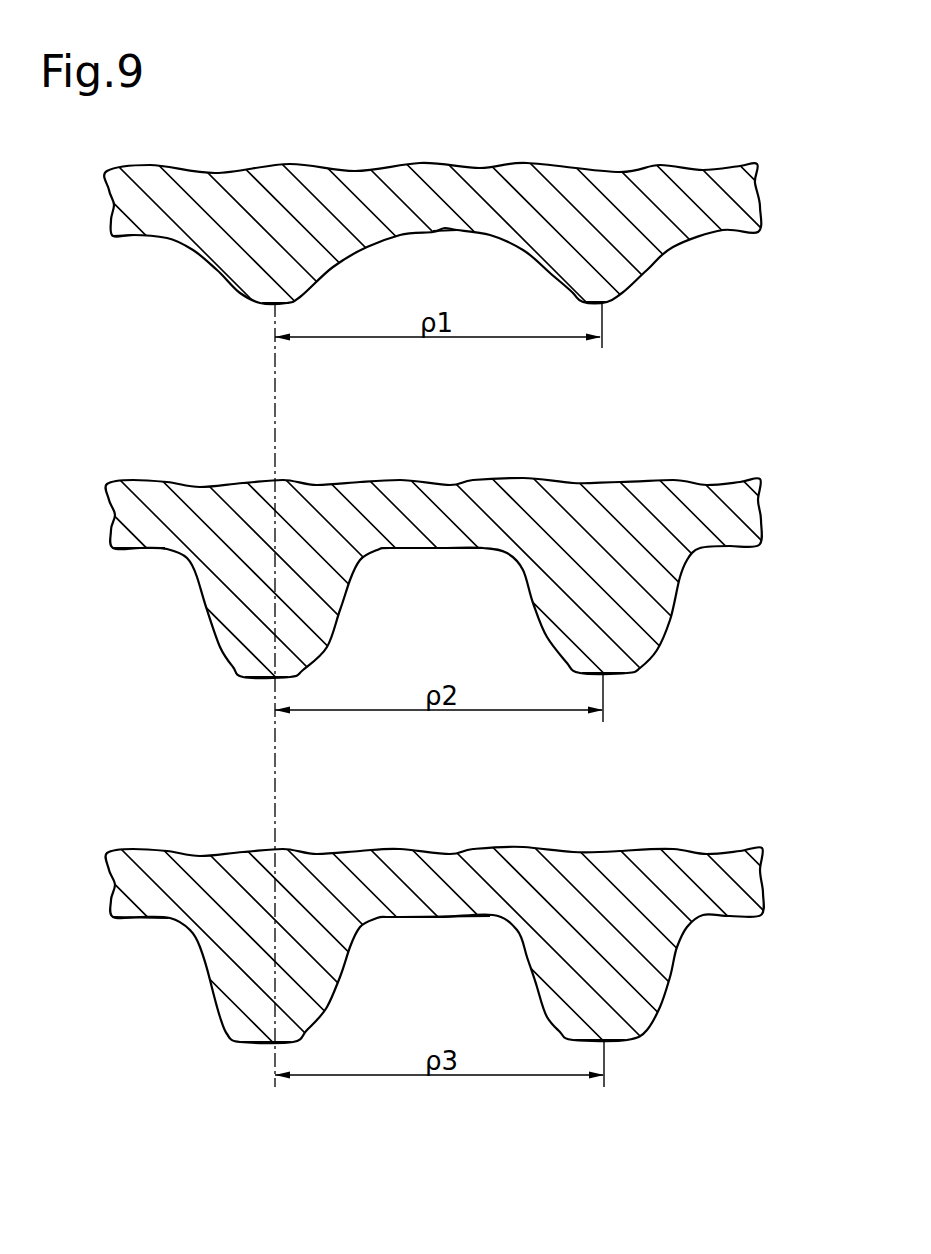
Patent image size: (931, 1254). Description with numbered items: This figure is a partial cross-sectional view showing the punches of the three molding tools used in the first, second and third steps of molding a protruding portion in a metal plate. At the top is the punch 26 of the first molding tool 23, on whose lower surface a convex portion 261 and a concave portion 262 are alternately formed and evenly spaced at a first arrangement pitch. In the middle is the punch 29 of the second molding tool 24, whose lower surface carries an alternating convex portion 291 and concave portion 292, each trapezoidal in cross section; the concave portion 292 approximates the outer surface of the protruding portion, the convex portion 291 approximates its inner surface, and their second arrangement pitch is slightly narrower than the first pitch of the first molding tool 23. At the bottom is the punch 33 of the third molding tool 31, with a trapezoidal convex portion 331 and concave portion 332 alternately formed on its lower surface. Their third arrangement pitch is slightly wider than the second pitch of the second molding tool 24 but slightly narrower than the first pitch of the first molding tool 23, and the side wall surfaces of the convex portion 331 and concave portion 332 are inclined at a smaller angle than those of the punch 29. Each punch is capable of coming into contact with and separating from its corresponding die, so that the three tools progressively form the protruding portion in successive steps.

The first molding tool 23 is at (760, 176).
The punch 26 is at (759, 218).
The convex portion 261 is at (288, 303).
The concave portion 262 is at (447, 229).
The second molding tool 24 is at (760, 488).
The punch 29 is at (759, 523).
The convex portion 291 is at (296, 677).
The concave portion 292 is at (447, 547).
The third molding tool 31 is at (762, 859).
The punch 33 is at (761, 895).
The convex portion 331 is at (297, 1042).
The concave portion 332 is at (447, 916).